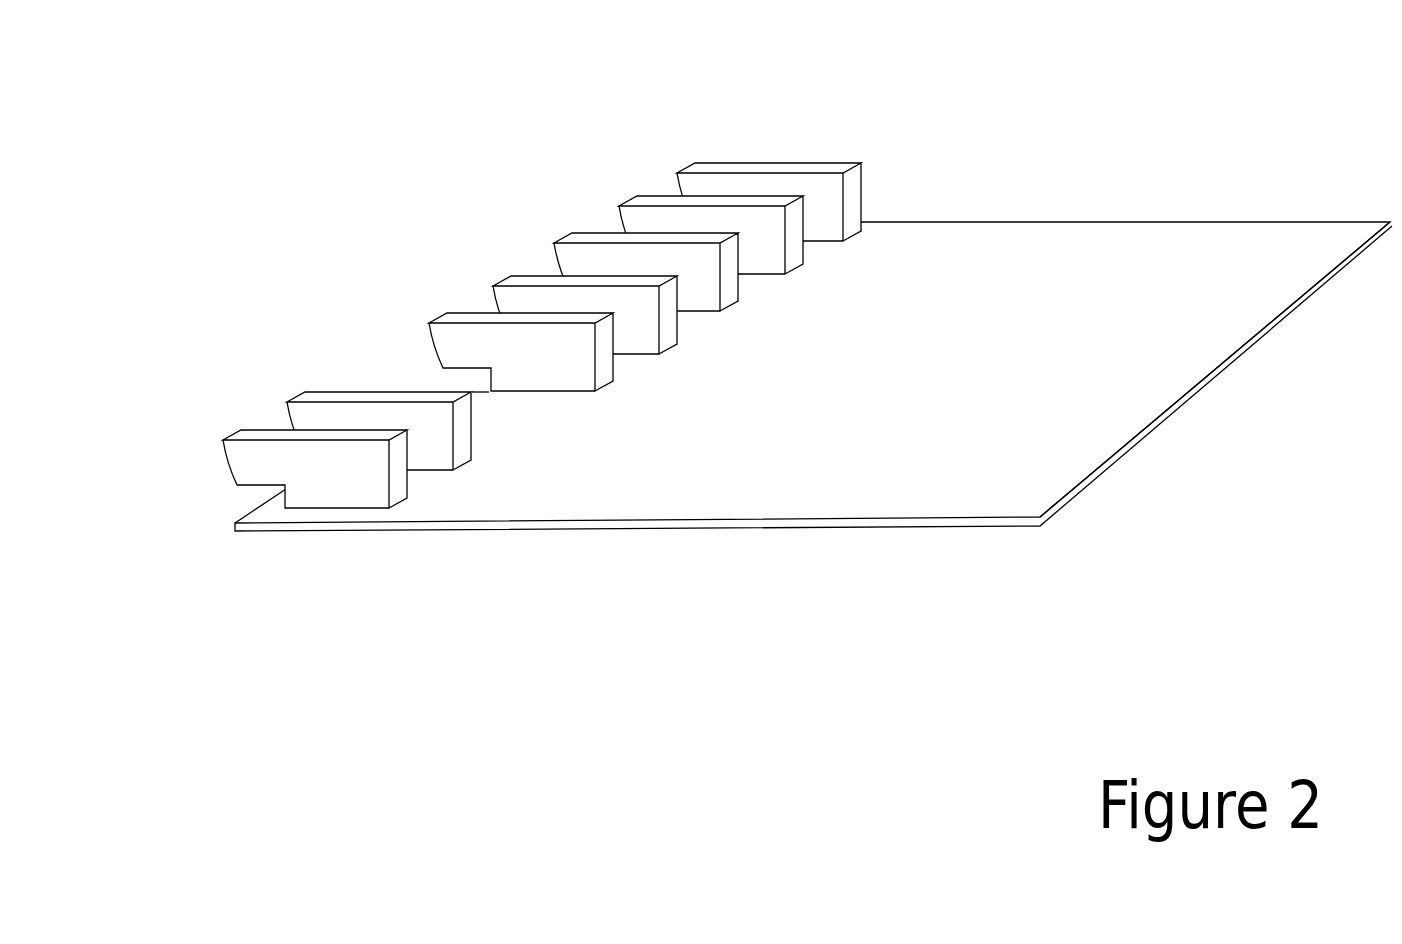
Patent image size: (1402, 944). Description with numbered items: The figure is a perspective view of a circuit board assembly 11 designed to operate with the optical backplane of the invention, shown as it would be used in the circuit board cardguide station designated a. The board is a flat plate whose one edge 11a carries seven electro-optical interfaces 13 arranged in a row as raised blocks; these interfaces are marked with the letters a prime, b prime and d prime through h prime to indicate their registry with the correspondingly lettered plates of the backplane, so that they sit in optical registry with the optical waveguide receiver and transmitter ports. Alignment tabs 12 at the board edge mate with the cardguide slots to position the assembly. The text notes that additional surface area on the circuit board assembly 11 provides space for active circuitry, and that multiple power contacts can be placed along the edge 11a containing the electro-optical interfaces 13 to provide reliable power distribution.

The circuit board assembly 11 is at (990, 490).
The edge 11a is at (478, 390).
The alignment tabs 12 is at (260, 503).
The electro-optical interfaces 13 is at (367, 432).